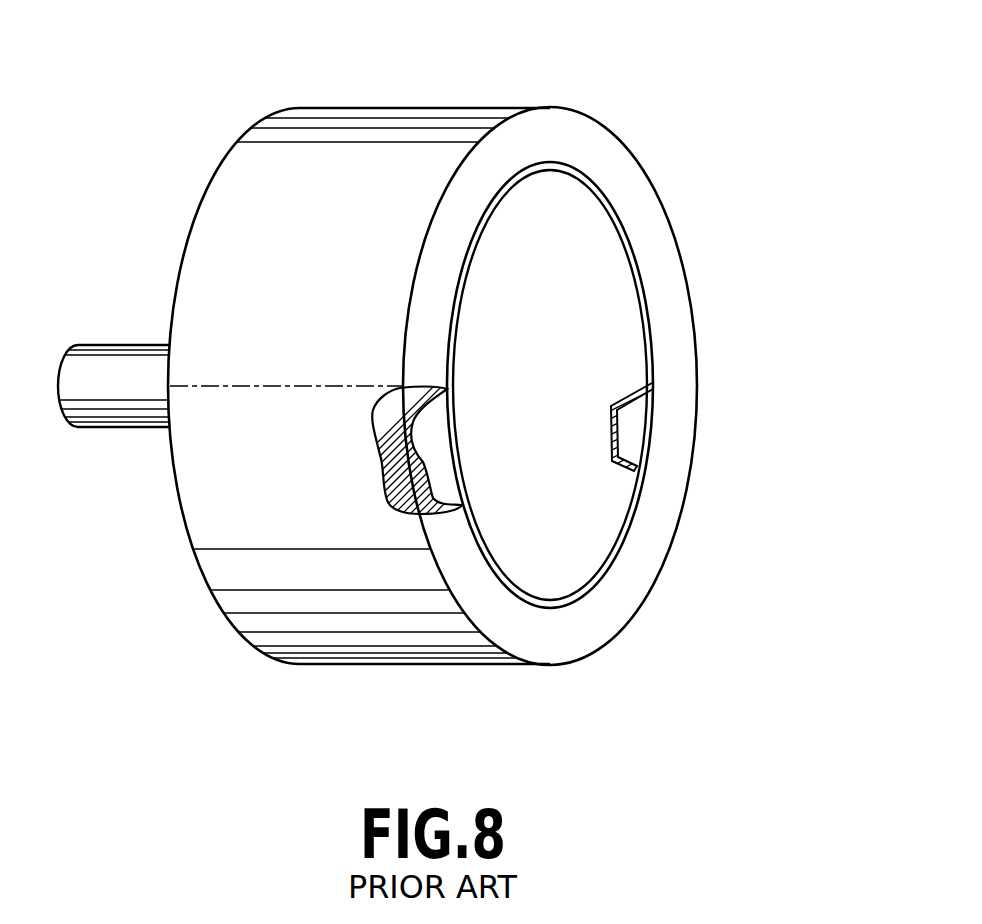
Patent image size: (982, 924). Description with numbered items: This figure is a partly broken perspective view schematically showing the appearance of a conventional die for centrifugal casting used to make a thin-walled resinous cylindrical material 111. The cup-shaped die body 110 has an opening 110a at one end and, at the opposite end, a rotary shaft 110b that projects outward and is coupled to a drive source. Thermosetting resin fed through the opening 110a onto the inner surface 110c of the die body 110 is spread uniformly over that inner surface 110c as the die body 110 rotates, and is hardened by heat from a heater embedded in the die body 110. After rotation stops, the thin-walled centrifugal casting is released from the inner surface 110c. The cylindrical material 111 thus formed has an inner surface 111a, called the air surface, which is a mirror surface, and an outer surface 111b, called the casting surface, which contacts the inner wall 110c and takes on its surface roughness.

The die body 110 is at (207, 90).
The opening 110a is at (600, 312).
The rotary shaft 110b is at (98, 358).
The inner surface 110c is at (640, 433).
The thin-walled resinous cylindrical material 111 is at (636, 261).
The inner surface (air surface) 111a is at (598, 537).
The outer surface (casting surface) 111b is at (430, 452).